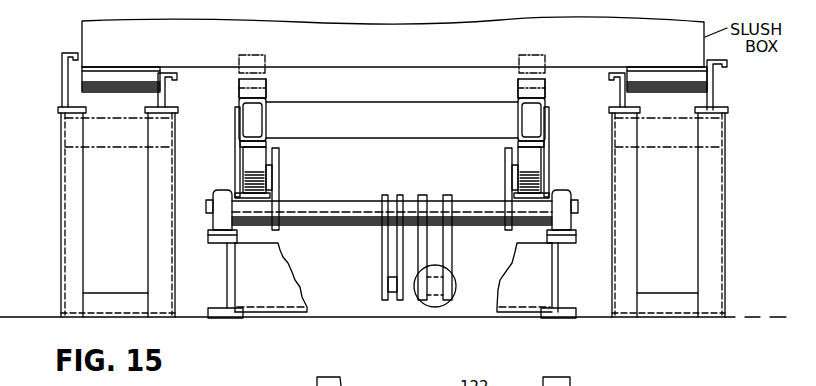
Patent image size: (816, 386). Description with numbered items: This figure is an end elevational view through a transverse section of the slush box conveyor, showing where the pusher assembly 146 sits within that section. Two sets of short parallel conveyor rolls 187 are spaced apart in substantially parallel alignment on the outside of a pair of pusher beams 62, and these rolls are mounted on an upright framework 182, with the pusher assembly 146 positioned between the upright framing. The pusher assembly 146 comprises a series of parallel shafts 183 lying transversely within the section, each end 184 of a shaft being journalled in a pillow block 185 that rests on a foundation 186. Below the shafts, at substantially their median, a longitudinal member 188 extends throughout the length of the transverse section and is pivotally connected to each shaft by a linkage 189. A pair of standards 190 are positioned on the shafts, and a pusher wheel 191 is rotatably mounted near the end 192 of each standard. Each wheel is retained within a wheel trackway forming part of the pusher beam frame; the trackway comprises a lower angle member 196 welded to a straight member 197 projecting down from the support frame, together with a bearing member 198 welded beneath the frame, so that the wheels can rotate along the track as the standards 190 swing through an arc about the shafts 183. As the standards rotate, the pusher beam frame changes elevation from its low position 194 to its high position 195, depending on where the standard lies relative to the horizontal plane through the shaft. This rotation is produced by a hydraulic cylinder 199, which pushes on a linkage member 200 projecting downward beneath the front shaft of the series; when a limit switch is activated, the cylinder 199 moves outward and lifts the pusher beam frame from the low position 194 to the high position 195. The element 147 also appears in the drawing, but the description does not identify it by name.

The pusher beams 62 is at (240, 115).
The pusher assembly 146 is at (393, 95).
The hanger bracket 147 is at (240, 90).
The upright framework 182 is at (70, 202).
The parallel shafts 183 is at (350, 208).
The end 184 is at (212, 202).
The pillow blocks 185 is at (222, 192).
The foundation 186 is at (230, 297).
The short parallel conveyor rolls 187 is at (136, 72).
The longitudinal member 188 is at (392, 288).
The linkage 189 is at (383, 252).
The standards 190 is at (278, 193).
The pusher wheel 191 is at (258, 152).
The end 192 is at (278, 168).
The low position 194 is at (267, 87).
The high position 195 is at (266, 57).
The lower angle member 196 is at (240, 185).
The straight member 197 is at (238, 158).
The bearing member 198 is at (243, 146).
The hydraulic cylinder 199 is at (435, 307).
The linkage member 200 is at (450, 247).